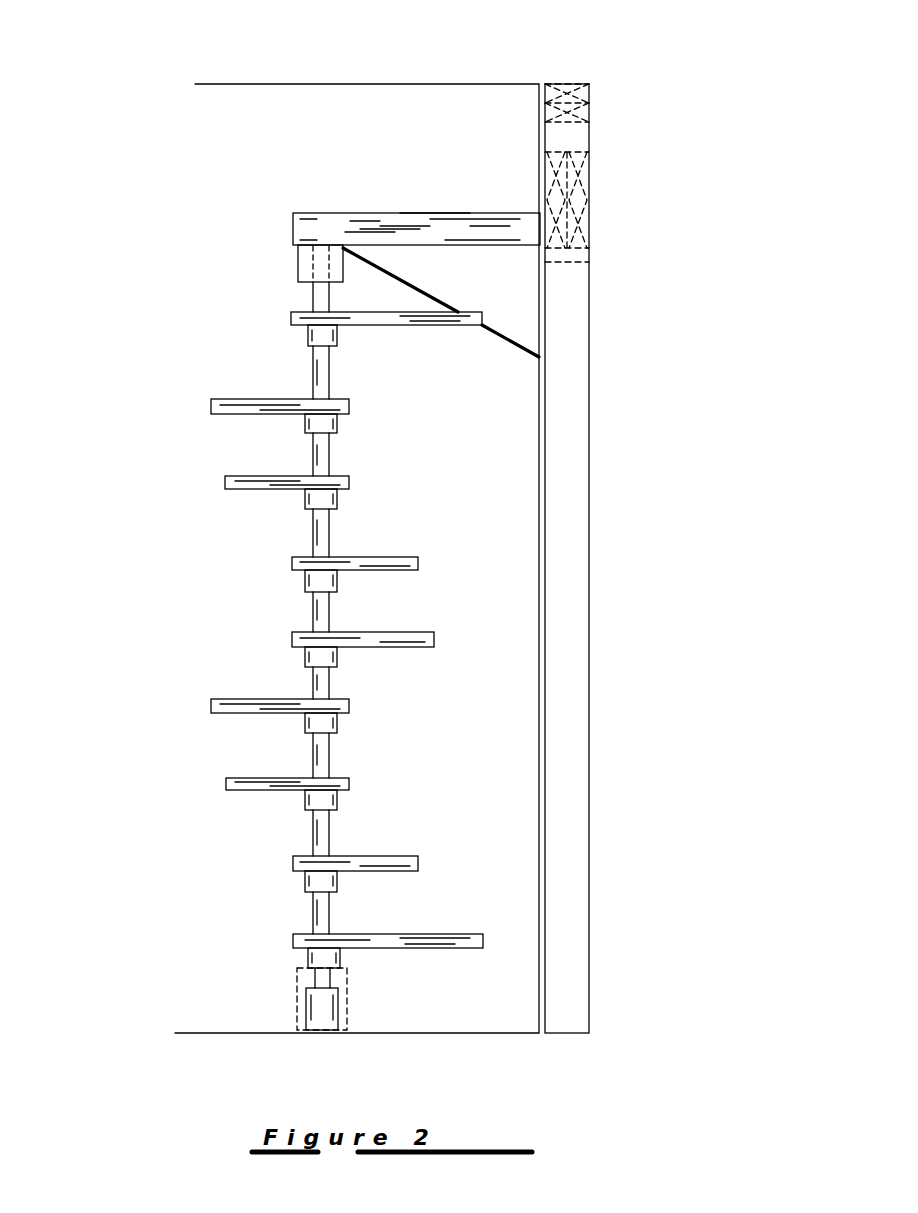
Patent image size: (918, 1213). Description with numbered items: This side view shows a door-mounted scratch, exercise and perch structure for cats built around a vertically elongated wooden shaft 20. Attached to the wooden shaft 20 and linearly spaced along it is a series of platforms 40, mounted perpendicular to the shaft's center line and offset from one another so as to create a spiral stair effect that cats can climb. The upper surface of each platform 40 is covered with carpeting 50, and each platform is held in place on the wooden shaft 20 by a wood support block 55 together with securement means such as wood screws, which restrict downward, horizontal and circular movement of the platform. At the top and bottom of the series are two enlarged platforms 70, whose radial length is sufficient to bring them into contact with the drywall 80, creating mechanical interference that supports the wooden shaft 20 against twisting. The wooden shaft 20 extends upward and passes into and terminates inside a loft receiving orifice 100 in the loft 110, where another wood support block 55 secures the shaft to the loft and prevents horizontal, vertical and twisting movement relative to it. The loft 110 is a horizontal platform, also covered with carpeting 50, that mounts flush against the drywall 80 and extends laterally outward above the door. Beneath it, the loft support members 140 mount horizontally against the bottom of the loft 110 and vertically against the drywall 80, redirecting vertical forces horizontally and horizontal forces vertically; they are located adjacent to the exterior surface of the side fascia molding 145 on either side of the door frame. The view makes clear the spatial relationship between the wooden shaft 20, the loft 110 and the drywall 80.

The wooden shaft 20 is at (322, 537).
The platforms 40 is at (225, 478).
The carpeting 50 is at (432, 212).
The wood support block 55 is at (298, 264).
The enlarged platforms 70 is at (291, 318).
The drywall 80 is at (538, 155).
The loft receiving orifice 100 is at (318, 244).
The loft 110 is at (293, 218).
The loft support members 140 is at (495, 282).
The side fascia molding 145 is at (568, 500).